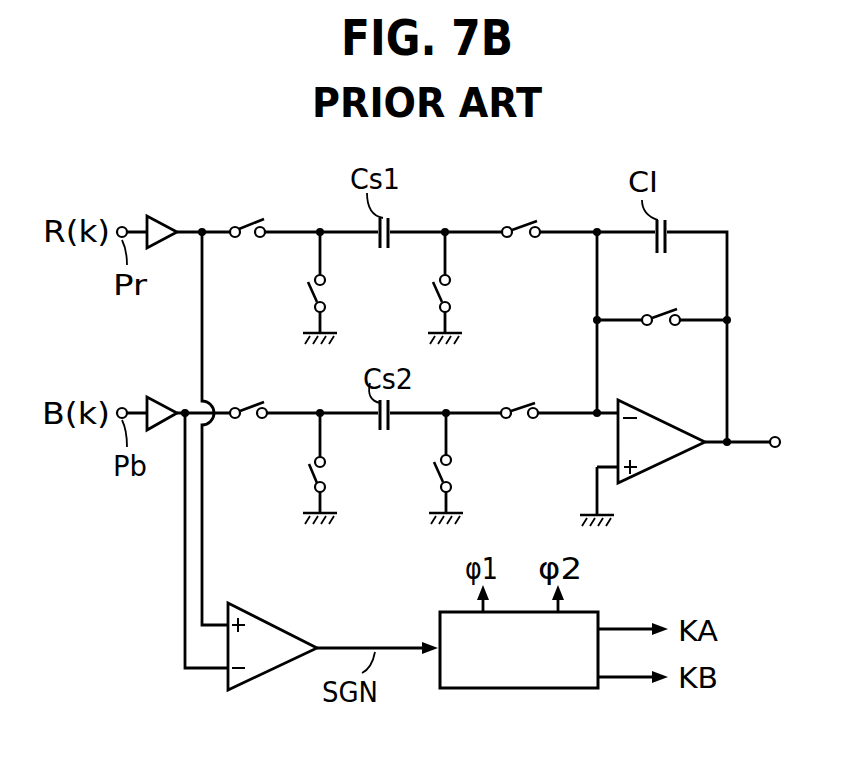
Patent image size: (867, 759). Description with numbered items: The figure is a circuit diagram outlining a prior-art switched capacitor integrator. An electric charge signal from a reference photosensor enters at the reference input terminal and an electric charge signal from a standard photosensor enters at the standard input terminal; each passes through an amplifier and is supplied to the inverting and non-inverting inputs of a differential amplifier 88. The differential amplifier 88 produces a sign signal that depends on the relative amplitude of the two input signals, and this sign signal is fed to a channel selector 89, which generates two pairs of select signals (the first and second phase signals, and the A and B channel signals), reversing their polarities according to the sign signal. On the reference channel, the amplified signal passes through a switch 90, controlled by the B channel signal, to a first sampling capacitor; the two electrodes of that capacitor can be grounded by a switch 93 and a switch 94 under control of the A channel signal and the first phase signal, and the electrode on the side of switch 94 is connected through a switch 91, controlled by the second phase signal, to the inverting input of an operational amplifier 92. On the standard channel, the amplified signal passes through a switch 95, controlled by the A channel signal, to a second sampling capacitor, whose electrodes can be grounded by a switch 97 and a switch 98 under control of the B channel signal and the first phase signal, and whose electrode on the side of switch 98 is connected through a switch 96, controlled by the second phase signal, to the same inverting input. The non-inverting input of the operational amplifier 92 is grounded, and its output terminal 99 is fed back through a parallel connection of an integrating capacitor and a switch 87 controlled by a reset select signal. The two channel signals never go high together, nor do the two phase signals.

The switch 87 is at (668, 302).
The differential amplifier 88 is at (303, 635).
The channel selector 89 is at (565, 690).
The switch 90 is at (243, 228).
The switch 91 is at (520, 224).
The operational amplifier 92 is at (667, 463).
The switch 93 is at (327, 293).
The switch 94 is at (452, 293).
The switch 95 is at (250, 405).
The switch 96 is at (530, 410).
The switch 97 is at (310, 468).
The switch 98 is at (443, 477).
The output terminal 99 is at (775, 447).